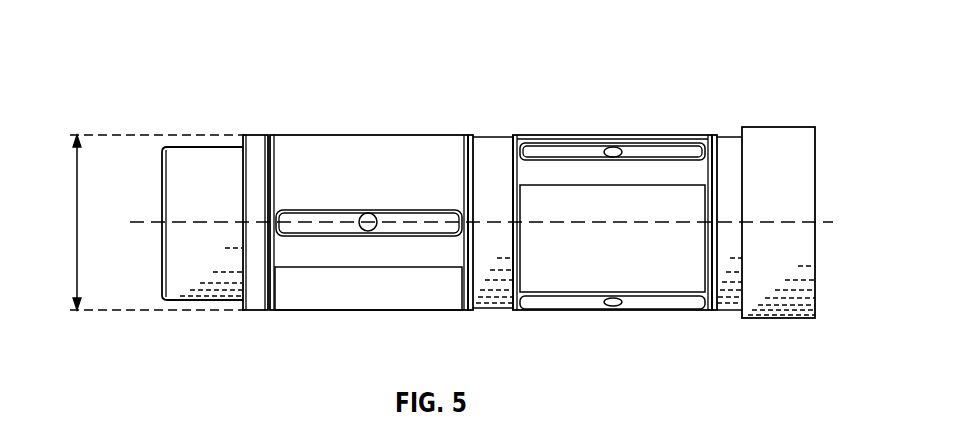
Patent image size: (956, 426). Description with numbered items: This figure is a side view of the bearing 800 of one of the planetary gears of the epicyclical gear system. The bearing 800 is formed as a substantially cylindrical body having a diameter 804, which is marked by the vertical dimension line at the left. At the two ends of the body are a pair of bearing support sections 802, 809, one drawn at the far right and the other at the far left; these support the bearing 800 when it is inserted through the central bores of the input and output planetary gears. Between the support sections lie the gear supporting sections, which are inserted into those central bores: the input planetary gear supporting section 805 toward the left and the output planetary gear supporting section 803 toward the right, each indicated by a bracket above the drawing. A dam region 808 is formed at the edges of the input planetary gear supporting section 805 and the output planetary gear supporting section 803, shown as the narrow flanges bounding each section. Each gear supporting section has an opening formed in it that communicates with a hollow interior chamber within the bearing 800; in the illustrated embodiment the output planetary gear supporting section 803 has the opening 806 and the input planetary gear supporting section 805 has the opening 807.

The bearing 800 is at (118, 49).
The bearing support section 802 is at (778, 127).
The output planetary gear supporting section 803 is at (712, 135).
The diameter 804 is at (77, 222).
The input planetary gear supporting section 805 is at (468, 135).
The opening 806 is at (613, 309).
The opening 807 is at (370, 212).
The dam region 808 is at (272, 312).
The bearing support section 809 is at (197, 302).